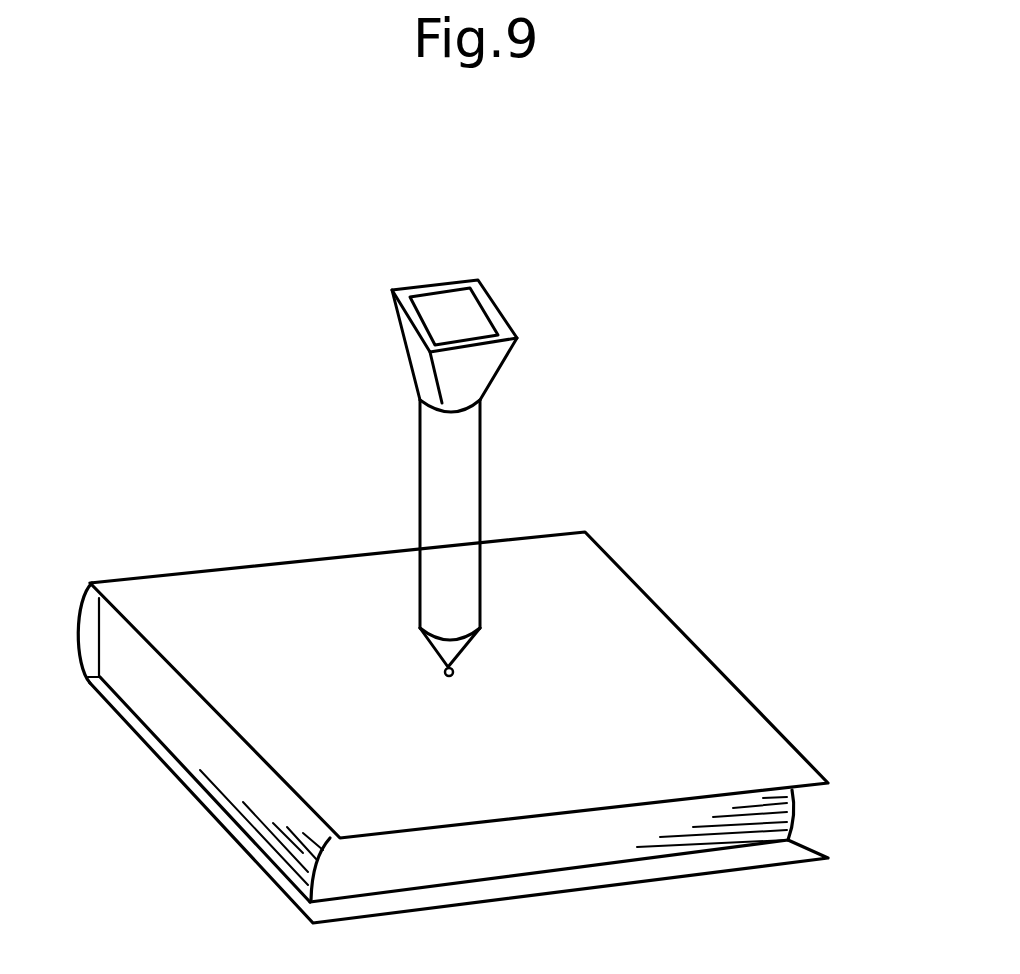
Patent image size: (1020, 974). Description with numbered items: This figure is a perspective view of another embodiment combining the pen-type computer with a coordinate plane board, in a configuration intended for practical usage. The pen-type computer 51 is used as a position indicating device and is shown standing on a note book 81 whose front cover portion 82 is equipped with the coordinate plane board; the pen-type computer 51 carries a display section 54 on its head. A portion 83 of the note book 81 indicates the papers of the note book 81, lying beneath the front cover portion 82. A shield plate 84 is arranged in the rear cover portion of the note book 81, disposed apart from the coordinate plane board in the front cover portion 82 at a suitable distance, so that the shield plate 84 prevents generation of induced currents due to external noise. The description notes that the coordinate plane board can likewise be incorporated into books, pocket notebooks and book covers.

The pen-type computer 51 is at (447, 444).
The display section 54 is at (472, 307).
The note book 81 is at (494, 723).
The front cover portion 82 is at (752, 737).
The papers 83 is at (790, 812).
The shield plate 84 is at (770, 862).